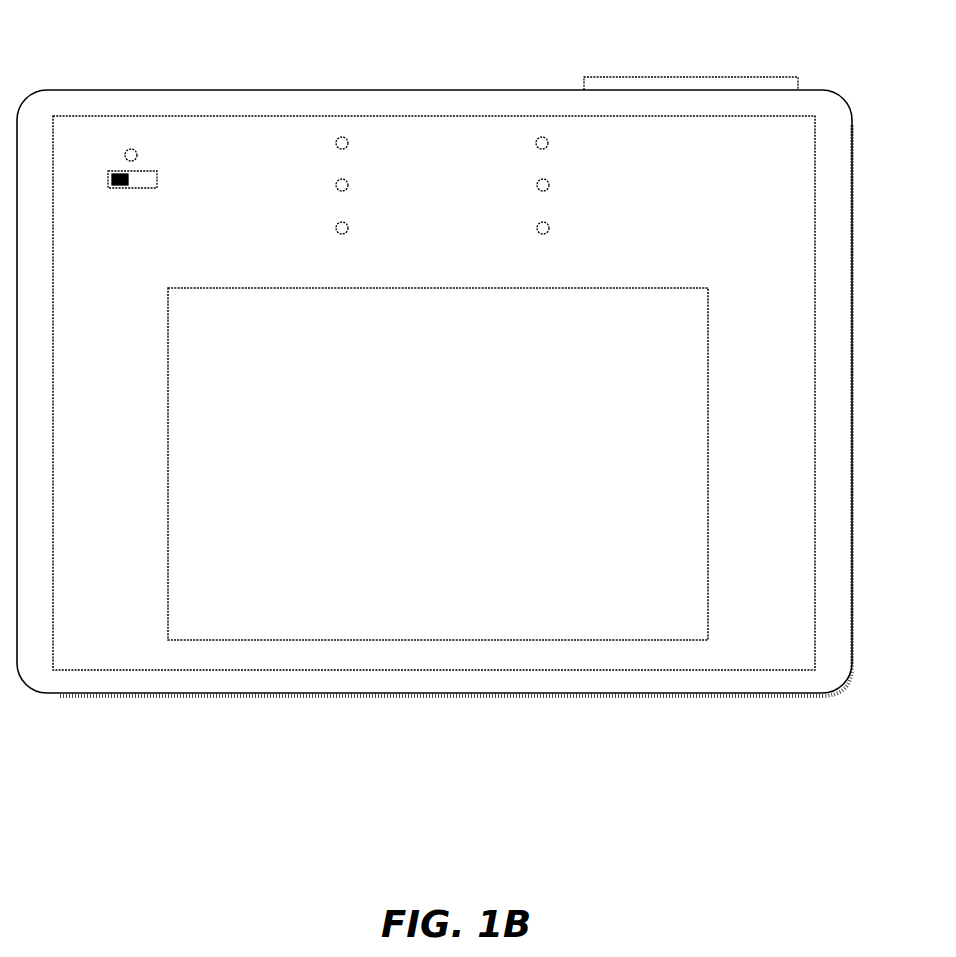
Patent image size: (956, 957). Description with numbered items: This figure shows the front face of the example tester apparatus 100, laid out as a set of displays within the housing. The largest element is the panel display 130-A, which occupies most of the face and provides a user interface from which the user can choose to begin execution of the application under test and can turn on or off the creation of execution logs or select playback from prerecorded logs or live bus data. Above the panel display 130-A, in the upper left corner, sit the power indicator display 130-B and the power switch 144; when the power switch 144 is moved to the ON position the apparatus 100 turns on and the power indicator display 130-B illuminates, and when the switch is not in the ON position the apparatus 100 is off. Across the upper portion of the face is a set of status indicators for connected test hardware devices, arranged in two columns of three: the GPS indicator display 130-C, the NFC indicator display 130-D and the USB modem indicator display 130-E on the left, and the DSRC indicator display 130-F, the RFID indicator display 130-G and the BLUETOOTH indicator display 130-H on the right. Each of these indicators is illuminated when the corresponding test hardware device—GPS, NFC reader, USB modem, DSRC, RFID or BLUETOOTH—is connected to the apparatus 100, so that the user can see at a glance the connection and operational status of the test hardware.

The tester apparatus 100 is at (106, 22).
The power switch 144 is at (108, 171).
The panel display 130-A is at (168, 296).
The power indicator display 130-B is at (133, 128).
The GPS indicator display 130-C is at (326, 162).
The NFC indicator display 130-D is at (292, 208).
The USB modem indicator display 130-E is at (292, 255).
The DSRC indicator display 130-F is at (566, 160).
The RFID indicator display 130-G is at (590, 204).
The BLUETOOTH indicator display 130-H is at (588, 249).